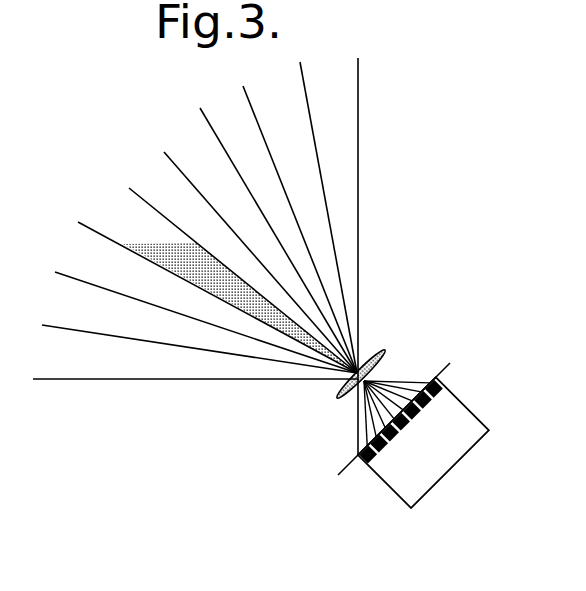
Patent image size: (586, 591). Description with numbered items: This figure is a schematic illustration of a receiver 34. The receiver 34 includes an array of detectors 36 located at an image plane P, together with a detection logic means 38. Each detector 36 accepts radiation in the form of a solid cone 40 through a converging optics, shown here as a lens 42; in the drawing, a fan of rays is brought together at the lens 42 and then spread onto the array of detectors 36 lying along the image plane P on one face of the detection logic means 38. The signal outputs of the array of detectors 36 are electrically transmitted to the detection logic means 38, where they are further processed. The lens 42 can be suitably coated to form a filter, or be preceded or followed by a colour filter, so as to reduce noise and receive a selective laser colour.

The receiver 34 is at (388, 242).
The detector 36 is at (417, 418).
The detection logic means 38 is at (465, 460).
The solid cone 40 is at (241, 296).
The lens 42 is at (342, 403).
The image plane P is at (442, 372).